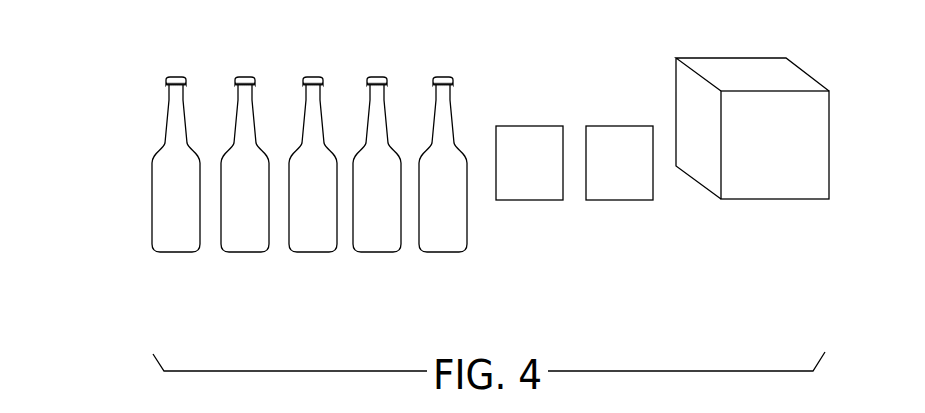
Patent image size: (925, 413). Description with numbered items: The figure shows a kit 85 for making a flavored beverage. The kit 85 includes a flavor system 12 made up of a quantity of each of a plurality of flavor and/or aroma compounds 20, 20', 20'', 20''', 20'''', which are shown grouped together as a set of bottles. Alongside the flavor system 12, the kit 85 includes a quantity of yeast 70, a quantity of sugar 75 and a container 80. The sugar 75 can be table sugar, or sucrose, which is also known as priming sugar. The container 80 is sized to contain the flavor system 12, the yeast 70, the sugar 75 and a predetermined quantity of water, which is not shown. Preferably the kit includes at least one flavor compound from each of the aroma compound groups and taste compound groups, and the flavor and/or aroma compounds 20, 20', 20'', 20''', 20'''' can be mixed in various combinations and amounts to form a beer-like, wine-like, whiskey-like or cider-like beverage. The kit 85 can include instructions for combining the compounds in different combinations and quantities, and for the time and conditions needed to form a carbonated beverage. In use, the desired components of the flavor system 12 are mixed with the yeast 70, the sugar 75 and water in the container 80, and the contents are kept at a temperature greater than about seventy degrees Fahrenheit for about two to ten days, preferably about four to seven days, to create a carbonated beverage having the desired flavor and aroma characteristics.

The kit 85 is at (96, 189).
The flavor system 12 is at (475, 80).
The flavor and/or aroma compound 20 is at (176, 199).
The flavor and/or aroma compound 20' is at (245, 199).
The flavor and/or aroma compound 20'' is at (316, 199).
The flavor and/or aroma compound 20''' is at (383, 199).
The flavor and/or aroma compound 20'''' is at (451, 199).
The yeast 70 is at (529, 163).
The sugar 75 is at (619, 163).
The container 80 is at (752, 128).